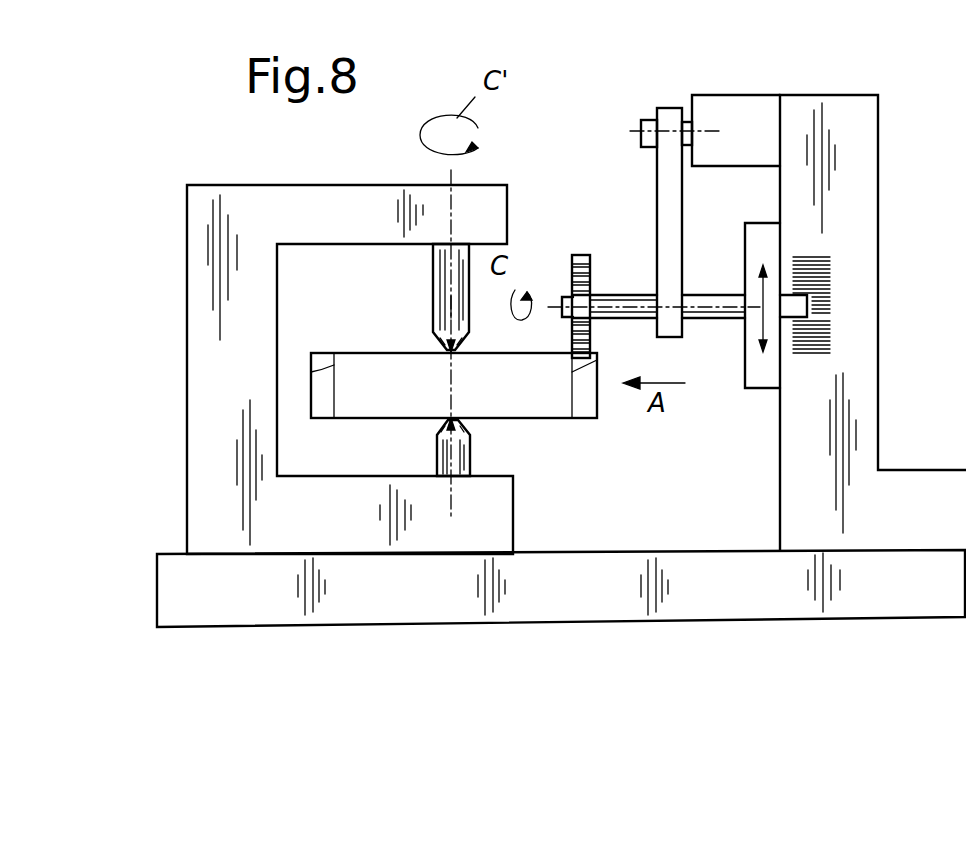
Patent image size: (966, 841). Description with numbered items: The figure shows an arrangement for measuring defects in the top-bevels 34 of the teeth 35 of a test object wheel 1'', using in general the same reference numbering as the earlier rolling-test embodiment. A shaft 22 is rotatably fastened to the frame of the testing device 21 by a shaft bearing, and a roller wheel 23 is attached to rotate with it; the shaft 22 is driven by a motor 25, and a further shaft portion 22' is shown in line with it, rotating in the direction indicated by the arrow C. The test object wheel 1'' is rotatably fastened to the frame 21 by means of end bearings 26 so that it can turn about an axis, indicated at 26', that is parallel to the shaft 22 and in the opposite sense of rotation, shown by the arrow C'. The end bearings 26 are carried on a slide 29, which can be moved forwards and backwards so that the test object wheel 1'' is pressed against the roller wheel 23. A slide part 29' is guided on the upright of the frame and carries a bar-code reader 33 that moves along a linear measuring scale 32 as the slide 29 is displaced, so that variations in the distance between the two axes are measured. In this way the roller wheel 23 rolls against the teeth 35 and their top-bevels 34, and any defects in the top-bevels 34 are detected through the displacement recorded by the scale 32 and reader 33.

The frame of the testing device 21 is at (363, 653).
The slide 29 is at (529, 324).
The slider block 29' is at (851, 272).
The end bearing 26 is at (417, 359).
The pin axis / center point 26' is at (390, 301).
The test object wheel 1'' is at (454, 428).
The top-bevels 34 is at (320, 360).
The teeth 35 is at (320, 424).
The shaft 22 is at (654, 335).
The shaft portion 22' is at (625, 265).
The roller wheel 23 is at (580, 257).
The motor 25 is at (749, 107).
The linear measuring scale 32 is at (817, 265).
The bar-code reader 33 is at (795, 307).